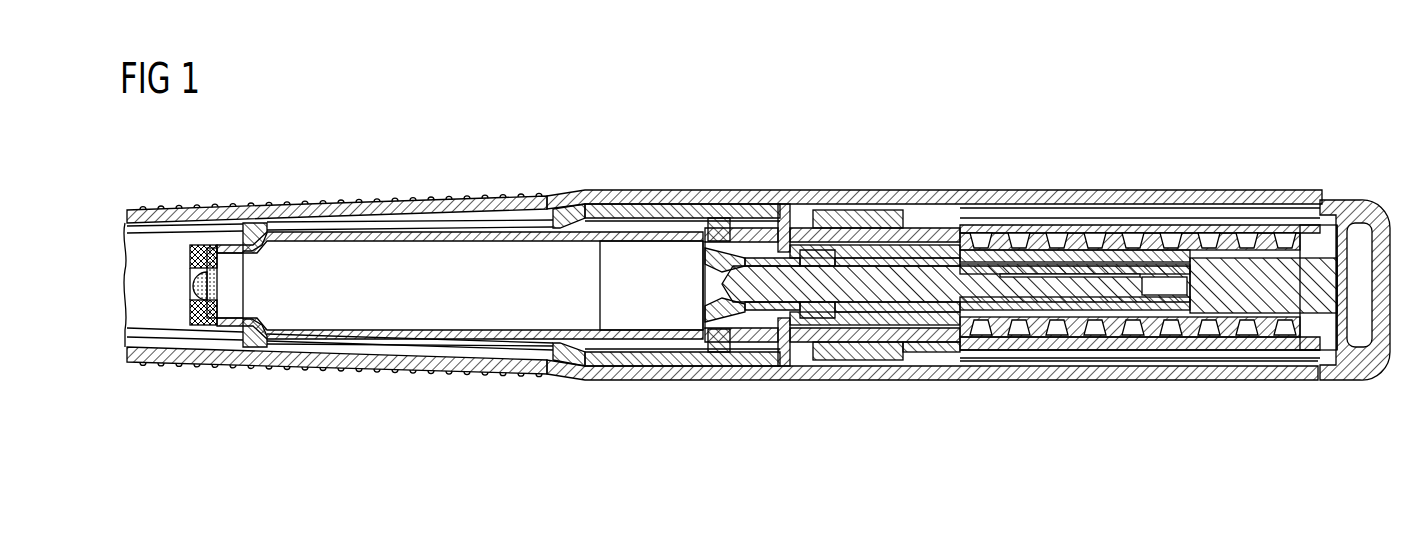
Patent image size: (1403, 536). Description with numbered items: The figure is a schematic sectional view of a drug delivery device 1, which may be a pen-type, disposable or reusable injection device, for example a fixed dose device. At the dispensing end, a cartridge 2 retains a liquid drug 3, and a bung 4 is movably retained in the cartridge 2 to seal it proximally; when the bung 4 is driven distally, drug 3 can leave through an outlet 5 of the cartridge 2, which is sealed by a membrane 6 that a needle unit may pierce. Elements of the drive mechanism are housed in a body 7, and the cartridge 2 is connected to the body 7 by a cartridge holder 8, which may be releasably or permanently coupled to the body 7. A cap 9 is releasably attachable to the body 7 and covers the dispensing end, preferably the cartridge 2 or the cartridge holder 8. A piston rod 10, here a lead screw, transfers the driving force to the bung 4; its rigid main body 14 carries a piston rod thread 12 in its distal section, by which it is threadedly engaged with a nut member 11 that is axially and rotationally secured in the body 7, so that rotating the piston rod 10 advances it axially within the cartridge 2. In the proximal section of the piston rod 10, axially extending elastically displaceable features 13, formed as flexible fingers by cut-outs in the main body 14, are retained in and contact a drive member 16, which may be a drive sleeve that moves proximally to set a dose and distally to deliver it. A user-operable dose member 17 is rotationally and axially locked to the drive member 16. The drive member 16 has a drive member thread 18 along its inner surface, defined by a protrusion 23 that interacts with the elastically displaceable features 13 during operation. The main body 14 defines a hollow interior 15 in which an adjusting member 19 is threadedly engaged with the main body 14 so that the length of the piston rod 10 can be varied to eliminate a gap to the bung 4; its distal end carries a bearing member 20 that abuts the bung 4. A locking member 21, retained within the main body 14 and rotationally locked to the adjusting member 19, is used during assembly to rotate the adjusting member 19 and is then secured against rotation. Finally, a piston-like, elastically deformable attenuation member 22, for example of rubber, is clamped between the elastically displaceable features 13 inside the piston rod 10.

The drug delivery device 1 is at (1060, 110).
The cartridge 2 is at (441, 322).
The drug 3 is at (413, 253).
The bung 4 is at (645, 255).
The outlet 5 is at (225, 270).
The membrane 6 is at (198, 288).
The body 7 is at (718, 195).
The cartridge holder 8 is at (480, 228).
The cap 9 is at (358, 205).
The piston rod 10 is at (789, 306).
The nut member 11 is at (790, 248).
The piston rod thread 12 is at (870, 245).
The elastically displaceable features 13 is at (1250, 315).
The main body 14 is at (1078, 250).
The hollow interior 15 is at (985, 250).
The drive member 16 is at (1053, 372).
The dose member 17 is at (1374, 203).
The drive member thread 18 is at (1000, 337).
The adjusting member 19 is at (908, 250).
The bearing member 20 is at (721, 316).
The locking member 21 is at (1158, 260).
The attenuation member 22 is at (1268, 300).
The protrusion 23 is at (1100, 340).